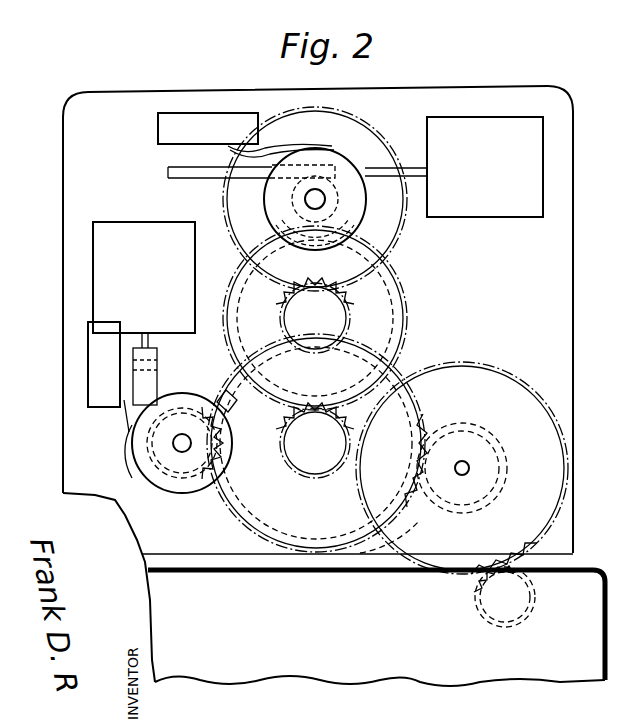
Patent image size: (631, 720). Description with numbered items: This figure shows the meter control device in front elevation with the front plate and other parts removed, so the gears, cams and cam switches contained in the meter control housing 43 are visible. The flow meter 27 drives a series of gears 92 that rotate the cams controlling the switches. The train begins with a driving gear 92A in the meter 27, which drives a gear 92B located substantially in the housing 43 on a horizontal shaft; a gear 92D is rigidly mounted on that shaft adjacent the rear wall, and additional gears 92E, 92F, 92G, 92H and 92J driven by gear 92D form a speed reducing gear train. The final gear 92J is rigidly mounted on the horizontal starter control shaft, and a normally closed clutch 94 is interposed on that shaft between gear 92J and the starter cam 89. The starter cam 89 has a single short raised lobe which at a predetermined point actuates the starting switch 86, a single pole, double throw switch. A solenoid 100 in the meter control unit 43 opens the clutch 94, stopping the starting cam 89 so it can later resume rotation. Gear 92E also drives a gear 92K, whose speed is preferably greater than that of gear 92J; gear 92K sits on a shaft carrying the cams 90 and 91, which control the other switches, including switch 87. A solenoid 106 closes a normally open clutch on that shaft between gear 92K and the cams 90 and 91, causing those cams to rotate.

The meter control housing 43 is at (386, 88).
The flow meter 27 is at (588, 566).
The starting switch 86 is at (158, 130).
The solenoid 100 is at (508, 120).
The solenoid 106 is at (113, 222).
The switch 87 is at (88, 352).
The final gear 92J is at (222, 193).
The clutch 94 is at (336, 190).
The starter cam 89 is at (358, 214).
The gear 92G is at (400, 290).
The gear 92H is at (350, 318).
The series of gears 92 is at (453, 350).
The gear 92E is at (300, 548).
The gear 92F is at (326, 472).
The gear 92D is at (476, 424).
The gear 92B is at (408, 552).
The driving gear 92A is at (496, 620).
The cam 91 is at (130, 445).
The gear 92K is at (172, 472).
The cam 90 is at (224, 396).